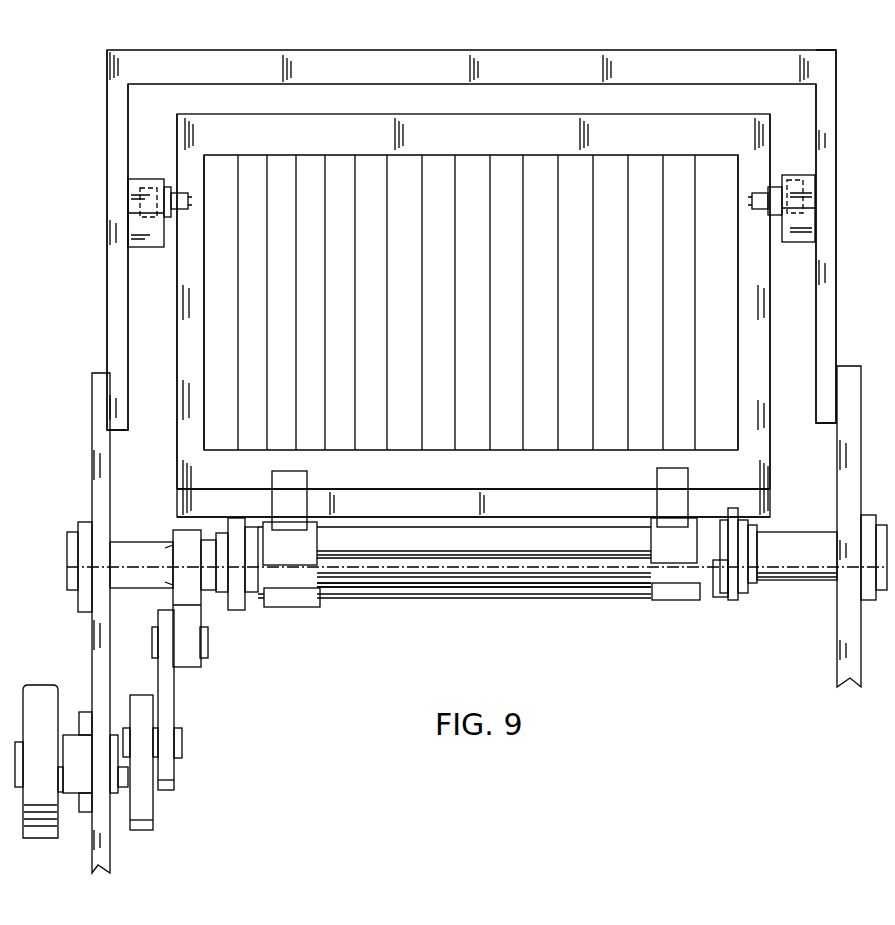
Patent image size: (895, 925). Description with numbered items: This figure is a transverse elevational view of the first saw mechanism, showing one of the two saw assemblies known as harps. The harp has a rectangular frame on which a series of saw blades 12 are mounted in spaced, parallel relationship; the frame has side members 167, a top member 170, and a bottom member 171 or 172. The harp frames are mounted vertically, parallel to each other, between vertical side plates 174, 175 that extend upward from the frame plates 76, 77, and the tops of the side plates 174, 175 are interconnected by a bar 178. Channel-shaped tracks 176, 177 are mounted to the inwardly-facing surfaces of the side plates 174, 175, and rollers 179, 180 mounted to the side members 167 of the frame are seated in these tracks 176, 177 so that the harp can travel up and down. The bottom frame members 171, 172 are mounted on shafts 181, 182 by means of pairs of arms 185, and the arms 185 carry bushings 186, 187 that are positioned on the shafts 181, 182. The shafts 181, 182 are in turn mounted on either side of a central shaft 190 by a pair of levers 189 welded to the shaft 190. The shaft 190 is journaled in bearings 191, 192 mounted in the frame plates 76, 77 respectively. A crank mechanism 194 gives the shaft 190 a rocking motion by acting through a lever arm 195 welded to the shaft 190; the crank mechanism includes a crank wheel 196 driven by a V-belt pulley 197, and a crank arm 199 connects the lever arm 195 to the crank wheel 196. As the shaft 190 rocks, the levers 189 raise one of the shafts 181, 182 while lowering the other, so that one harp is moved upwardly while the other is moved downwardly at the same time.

The bar 178 is at (522, 62).
The vertical side plate 174 is at (828, 302).
The vertical side plate 175 is at (124, 189).
The top member 170 is at (572, 133).
The side member 167 is at (195, 286).
The bottom frame member 171 is at (448, 496).
The bottom frame member 172 is at (524, 478).
The saw blade 12 is at (232, 305).
The channel-shaped track 177 is at (136, 222).
The roller 180 is at (168, 185).
The channel-shaped track 176 is at (797, 240).
The roller 179 is at (773, 190).
The frame plate 77 is at (103, 478).
The frame plate 76 is at (850, 470).
The shaft 190 is at (130, 555).
The bearing 192 is at (78, 532).
The lever arm 195 is at (182, 605).
The lever 189 is at (240, 605).
The bushing 187 is at (300, 548).
The bushing 186 is at (305, 602).
The arm 185 is at (282, 482).
The shaft 181 is at (432, 590).
The shaft 182 is at (590, 545).
The bearing 191 is at (885, 595).
The V-belt pulley 197 is at (42, 696).
The crank wheel 196 is at (155, 808).
The crank arm 199 is at (168, 700).
The crank mechanism 194 is at (200, 742).